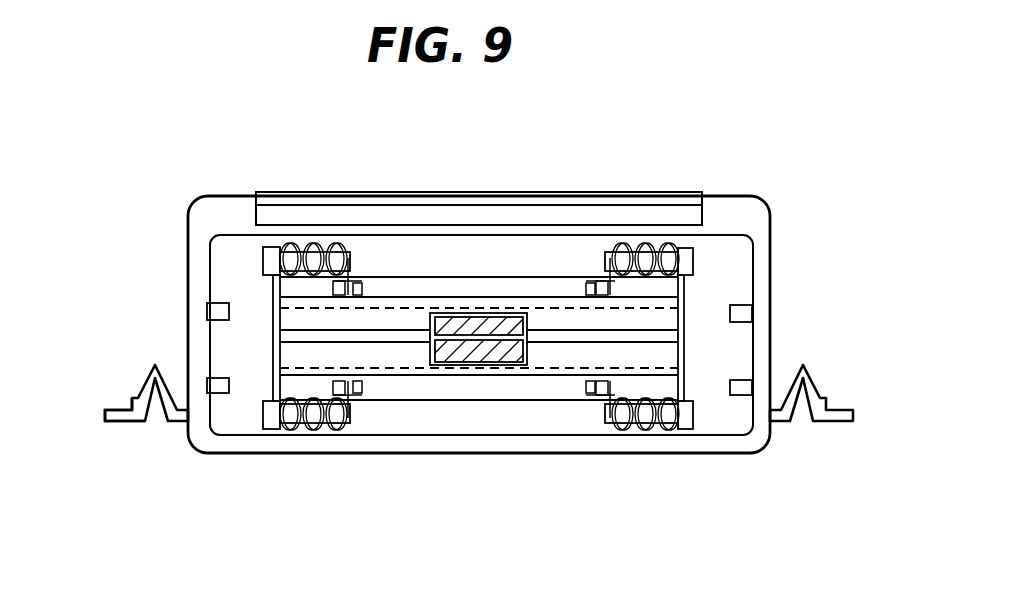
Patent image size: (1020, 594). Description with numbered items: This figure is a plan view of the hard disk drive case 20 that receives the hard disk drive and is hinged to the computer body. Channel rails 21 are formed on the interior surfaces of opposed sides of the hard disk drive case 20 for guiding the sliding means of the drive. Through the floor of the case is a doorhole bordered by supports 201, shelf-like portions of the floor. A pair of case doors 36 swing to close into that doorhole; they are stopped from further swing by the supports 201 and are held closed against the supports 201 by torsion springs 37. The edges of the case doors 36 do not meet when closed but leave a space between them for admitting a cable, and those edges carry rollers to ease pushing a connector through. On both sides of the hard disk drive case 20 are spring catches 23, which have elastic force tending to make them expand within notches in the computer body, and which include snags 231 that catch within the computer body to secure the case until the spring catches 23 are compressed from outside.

The hard disk drive case 20 is at (427, 443).
The supports 201 is at (565, 368).
The channel rails 21 is at (218, 303).
The spring catches 23 is at (155, 366).
The snags 231 is at (137, 400).
The case doors 36 is at (285, 357).
The torsion springs 37 is at (338, 246).